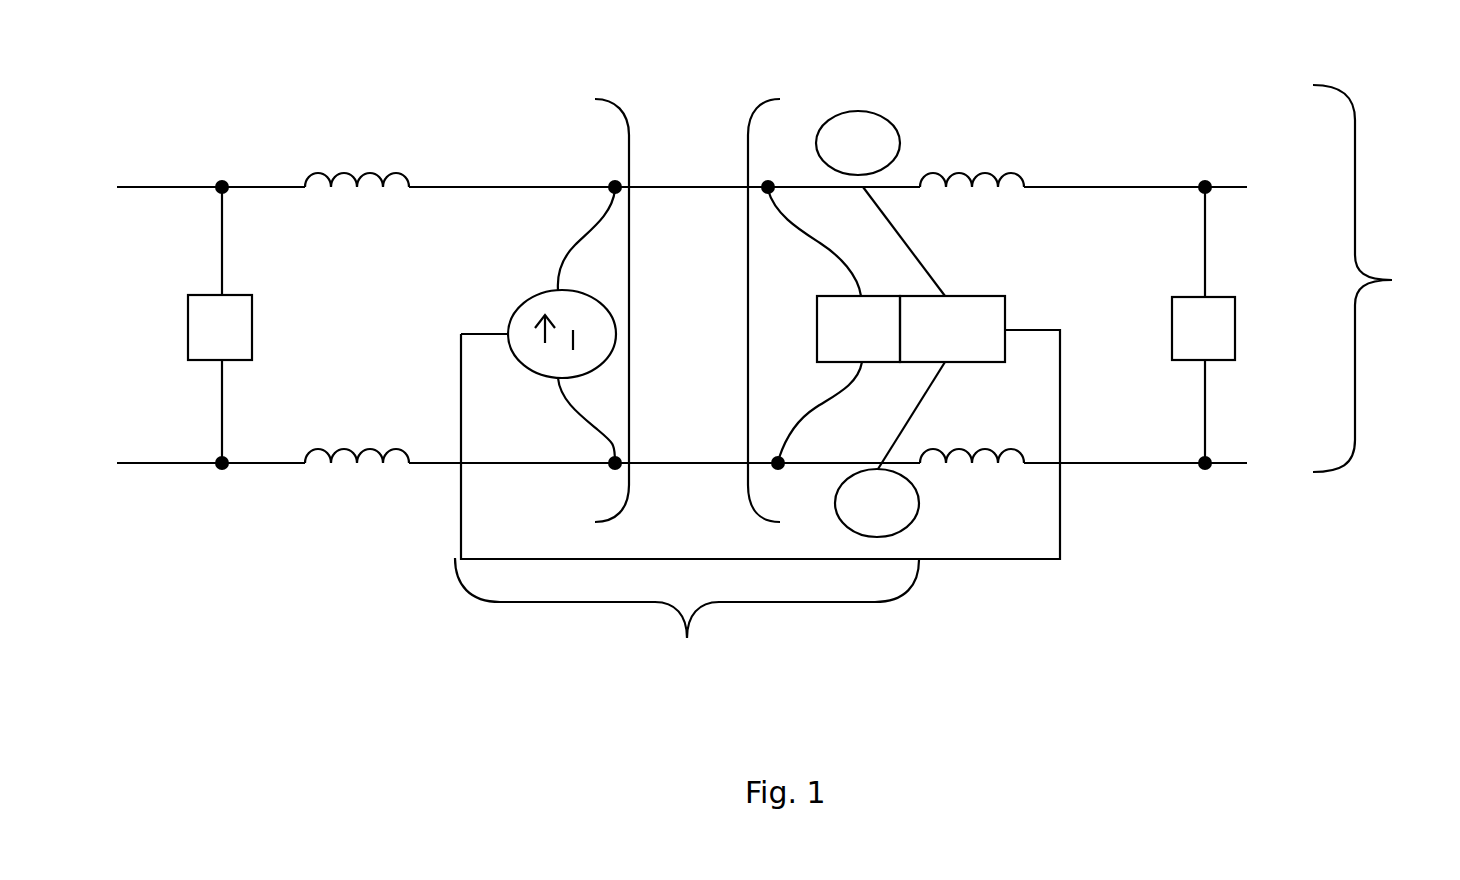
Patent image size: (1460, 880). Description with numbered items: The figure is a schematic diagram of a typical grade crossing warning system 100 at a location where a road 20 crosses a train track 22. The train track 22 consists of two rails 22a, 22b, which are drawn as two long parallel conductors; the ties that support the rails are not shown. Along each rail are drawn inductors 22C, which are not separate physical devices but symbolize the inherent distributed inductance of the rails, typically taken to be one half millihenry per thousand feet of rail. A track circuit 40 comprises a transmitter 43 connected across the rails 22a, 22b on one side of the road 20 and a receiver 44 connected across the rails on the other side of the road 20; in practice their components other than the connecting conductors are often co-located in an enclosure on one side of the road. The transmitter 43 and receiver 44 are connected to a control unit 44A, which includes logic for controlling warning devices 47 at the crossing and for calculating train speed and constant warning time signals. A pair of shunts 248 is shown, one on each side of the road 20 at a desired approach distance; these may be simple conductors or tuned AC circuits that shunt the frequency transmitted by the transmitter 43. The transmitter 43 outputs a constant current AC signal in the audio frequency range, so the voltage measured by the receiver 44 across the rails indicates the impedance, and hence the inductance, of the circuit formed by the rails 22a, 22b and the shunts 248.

The grade crossing warning system 100 is at (330, 96).
The road 20 is at (712, 88).
The train track 22 is at (1379, 278).
The rail 22a is at (1107, 187).
The rail 22b is at (1107, 463).
The inductors 22C is at (357, 187).
The shunts 248 is at (187, 323).
The transmitter 43 is at (518, 307).
The track circuit 40 is at (757, 508).
The receiver 44 is at (895, 278).
The control unit 44A is at (980, 296).
The warning devices 47 is at (898, 157).